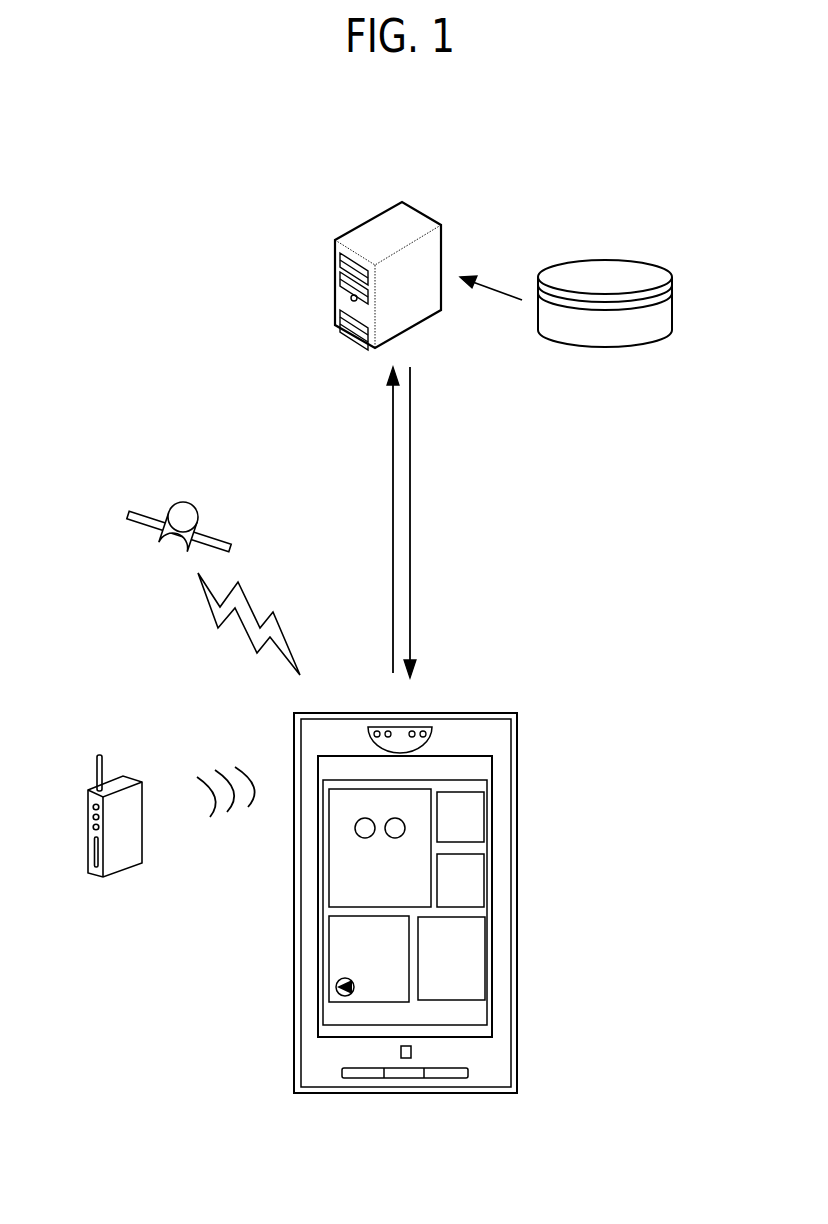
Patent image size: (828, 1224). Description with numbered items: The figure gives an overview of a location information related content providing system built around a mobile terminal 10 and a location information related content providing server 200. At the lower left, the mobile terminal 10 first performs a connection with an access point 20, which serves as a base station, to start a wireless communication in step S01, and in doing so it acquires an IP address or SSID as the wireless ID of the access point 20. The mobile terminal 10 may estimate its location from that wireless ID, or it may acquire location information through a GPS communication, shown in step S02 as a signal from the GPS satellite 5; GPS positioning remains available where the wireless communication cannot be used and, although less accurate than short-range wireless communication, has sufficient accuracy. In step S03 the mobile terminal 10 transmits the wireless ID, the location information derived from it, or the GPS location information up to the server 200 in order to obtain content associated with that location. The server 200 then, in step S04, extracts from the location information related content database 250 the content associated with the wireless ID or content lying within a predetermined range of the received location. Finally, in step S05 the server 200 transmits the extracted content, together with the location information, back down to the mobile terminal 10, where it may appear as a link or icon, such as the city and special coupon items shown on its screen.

The location information related content providing server 200 is at (425, 215).
The location information related content database 250 is at (630, 260).
The mobile terminal 10 is at (517, 753).
The access point 20 is at (135, 778).
The GPS satellite 5 is at (143, 508).
The connection step S01 is at (226, 813).
The location information acquiring step S02 is at (215, 623).
The transmitting step S03 is at (372, 520).
The content extracting step S04 is at (491, 271).
The content transmitting step S05 is at (431, 522).